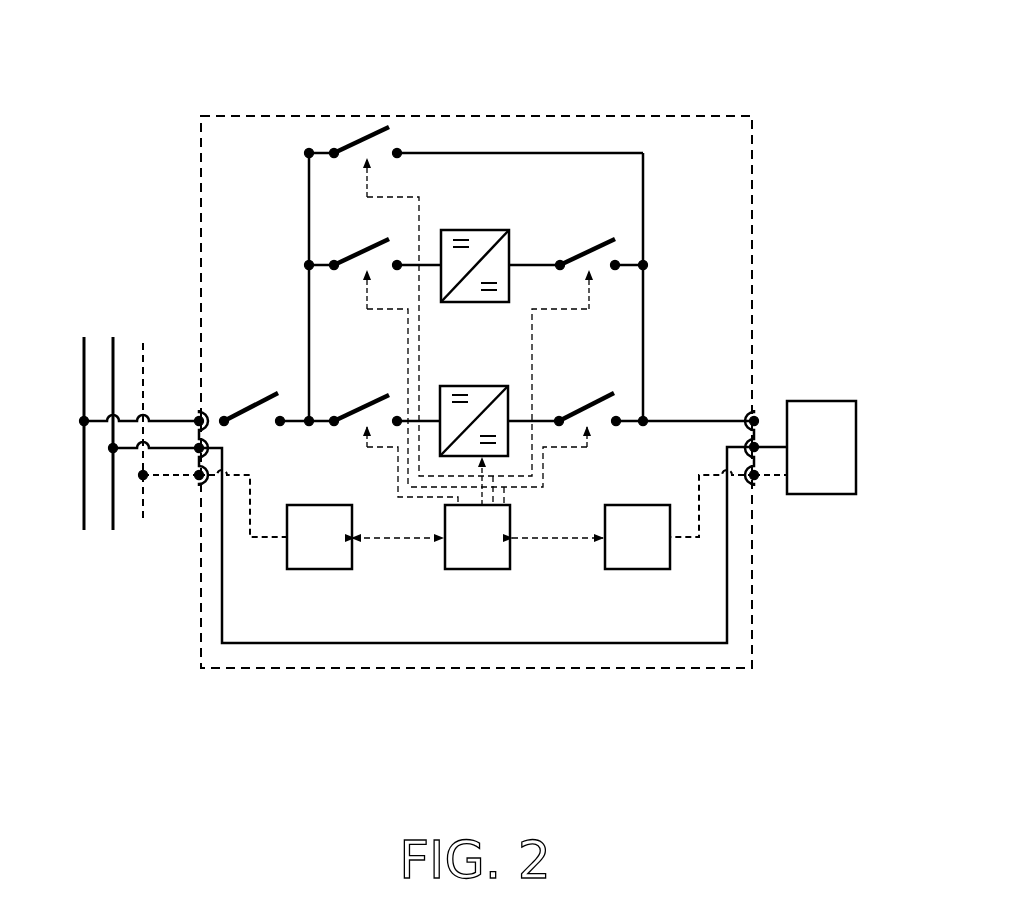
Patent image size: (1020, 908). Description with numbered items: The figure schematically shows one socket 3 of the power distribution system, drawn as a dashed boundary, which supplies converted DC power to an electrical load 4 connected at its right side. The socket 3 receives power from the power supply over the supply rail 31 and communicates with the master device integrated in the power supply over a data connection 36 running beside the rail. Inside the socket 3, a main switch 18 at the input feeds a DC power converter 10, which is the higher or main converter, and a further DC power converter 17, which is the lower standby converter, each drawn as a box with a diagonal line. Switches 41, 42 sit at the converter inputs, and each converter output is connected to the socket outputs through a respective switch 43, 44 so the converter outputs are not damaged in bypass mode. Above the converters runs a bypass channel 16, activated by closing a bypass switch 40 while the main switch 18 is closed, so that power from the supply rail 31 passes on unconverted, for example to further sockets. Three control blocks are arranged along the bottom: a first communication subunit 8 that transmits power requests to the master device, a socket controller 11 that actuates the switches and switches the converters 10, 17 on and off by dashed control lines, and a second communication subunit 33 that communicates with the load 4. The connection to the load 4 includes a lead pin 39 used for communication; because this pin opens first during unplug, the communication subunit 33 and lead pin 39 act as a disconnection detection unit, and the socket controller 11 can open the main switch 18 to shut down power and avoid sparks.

The socket 3 is at (752, 197).
The electrical load 4 is at (815, 494).
The first communication subunit 8 is at (315, 569).
The DC power converter 10 is at (483, 386).
The socket controller 11 is at (475, 569).
The bypass channel 16 is at (612, 149).
The further DC power converter 17 is at (483, 230).
The main switch 18 is at (245, 386).
The supply rail 31 is at (83, 394).
The second communication subunit 33 is at (630, 569).
The data connection 36 is at (142, 349).
The lead pin 39 is at (761, 488).
The bypass switch 40 is at (362, 127).
The switch 41 is at (344, 244).
The switch 42 is at (342, 431).
The switch 43 is at (585, 239).
The switch 44 is at (617, 403).